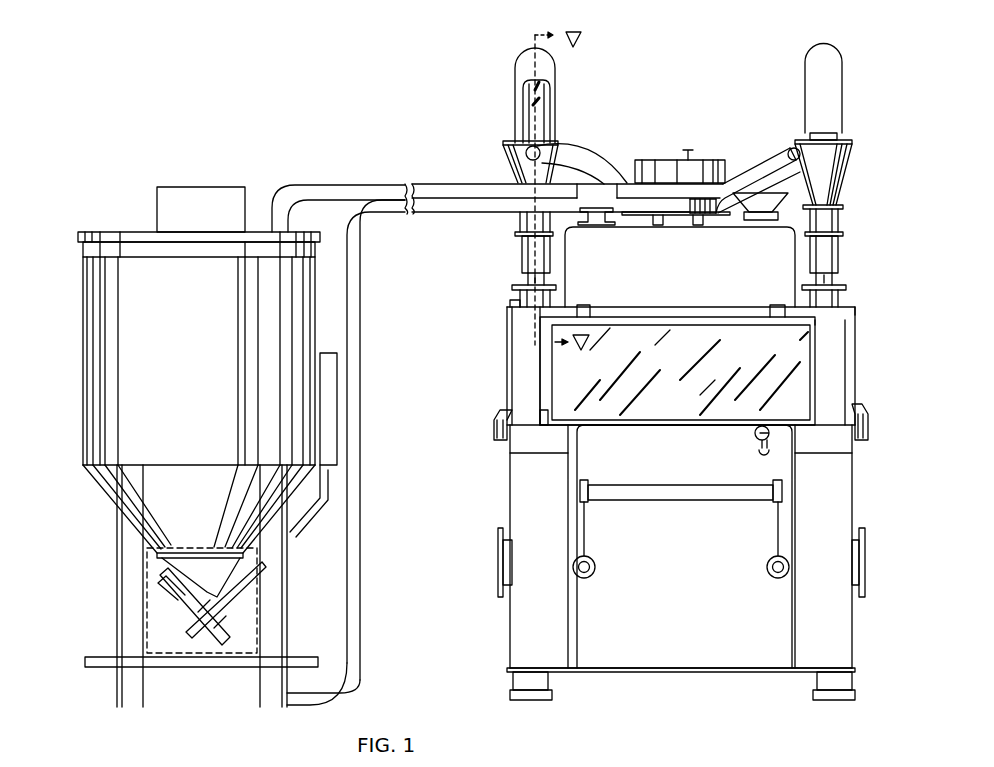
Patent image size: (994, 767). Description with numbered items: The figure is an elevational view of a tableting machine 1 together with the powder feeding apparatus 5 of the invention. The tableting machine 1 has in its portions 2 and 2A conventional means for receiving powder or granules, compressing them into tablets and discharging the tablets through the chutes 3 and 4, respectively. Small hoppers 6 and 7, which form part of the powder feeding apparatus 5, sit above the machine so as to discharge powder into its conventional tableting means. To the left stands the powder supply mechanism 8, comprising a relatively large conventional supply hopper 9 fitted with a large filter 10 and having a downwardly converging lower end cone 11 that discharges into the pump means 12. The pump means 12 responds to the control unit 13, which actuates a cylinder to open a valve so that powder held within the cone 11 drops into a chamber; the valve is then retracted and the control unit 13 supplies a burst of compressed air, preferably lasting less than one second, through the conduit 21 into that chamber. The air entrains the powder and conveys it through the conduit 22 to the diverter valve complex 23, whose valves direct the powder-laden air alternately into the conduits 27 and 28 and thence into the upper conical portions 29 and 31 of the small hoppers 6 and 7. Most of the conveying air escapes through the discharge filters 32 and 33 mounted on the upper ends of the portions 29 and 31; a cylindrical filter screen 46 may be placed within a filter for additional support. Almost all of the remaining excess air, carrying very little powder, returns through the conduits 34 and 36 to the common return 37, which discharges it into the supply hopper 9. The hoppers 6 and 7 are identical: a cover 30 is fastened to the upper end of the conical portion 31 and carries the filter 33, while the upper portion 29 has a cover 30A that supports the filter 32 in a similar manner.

The tableting machine 1 is at (860, 368).
The portion 2 is at (518, 340).
The portion 2A is at (840, 332).
The chute 3 is at (505, 413).
The chute 4 is at (862, 418).
The powder feeding apparatus 5 is at (362, 182).
The small hopper 6 is at (840, 262).
The small hopper 7 is at (528, 250).
The powder supply mechanism 8 is at (126, 222).
The supply hopper 9 is at (106, 318).
The filter 10 is at (195, 185).
The lower end cone 11 is at (101, 488).
The pump means 12 is at (203, 645).
The control unit 13 is at (330, 388).
The conduit 21 is at (299, 515).
The conduit 22 is at (352, 633).
The diverter valve complex 23 is at (691, 150).
The conduit 27 is at (780, 172).
The conduit 28 is at (581, 174).
The upper conical portion 29 is at (836, 174).
The cover 30 is at (507, 146).
The cover 30A is at (853, 142).
The conical upper portion 31 is at (512, 166).
The discharge filter 32 is at (826, 92).
The discharge filter 33 is at (524, 70).
The conduit 34 is at (771, 145).
The conduit 36 is at (607, 162).
The common return 37 is at (394, 182).
The cylindrical filter screen 46 is at (548, 100).